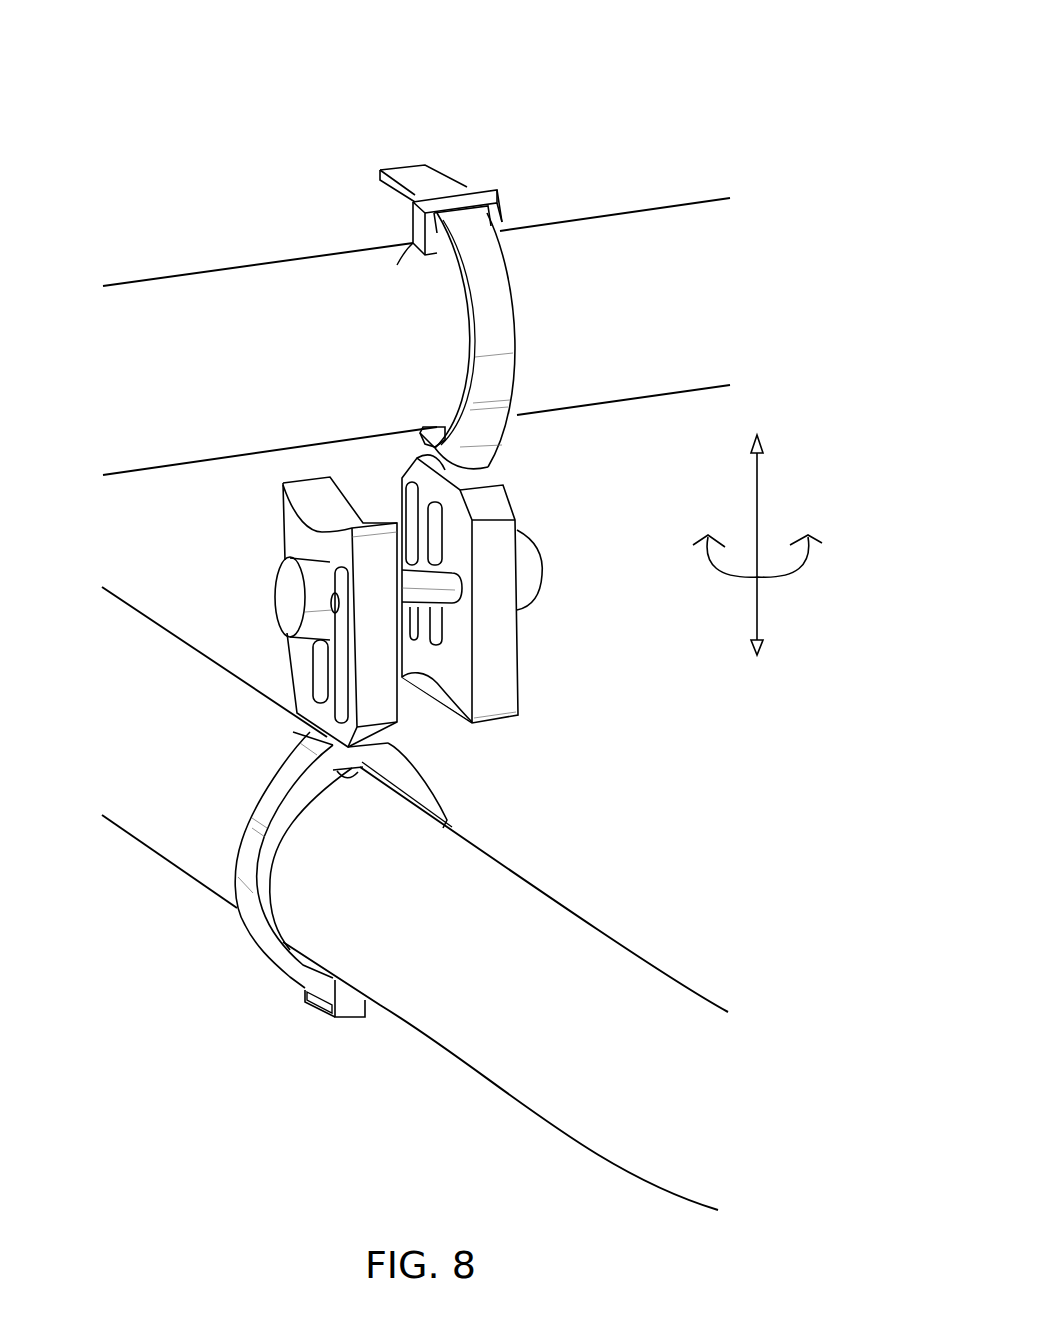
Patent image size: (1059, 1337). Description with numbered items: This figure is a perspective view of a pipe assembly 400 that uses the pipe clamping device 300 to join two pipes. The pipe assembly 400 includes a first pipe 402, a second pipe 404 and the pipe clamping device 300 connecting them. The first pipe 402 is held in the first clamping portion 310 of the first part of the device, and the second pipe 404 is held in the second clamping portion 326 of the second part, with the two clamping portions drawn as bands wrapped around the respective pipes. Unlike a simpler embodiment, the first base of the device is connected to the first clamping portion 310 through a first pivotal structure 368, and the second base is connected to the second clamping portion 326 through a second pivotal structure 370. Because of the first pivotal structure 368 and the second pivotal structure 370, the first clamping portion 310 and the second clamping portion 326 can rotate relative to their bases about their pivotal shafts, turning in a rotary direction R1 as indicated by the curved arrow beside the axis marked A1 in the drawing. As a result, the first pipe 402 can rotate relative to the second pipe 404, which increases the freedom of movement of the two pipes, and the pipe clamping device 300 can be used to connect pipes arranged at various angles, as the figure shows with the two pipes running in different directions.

The pipe assembly 400 is at (652, 41).
The first pipe 402 is at (692, 200).
The second pipe 404 is at (660, 973).
The first clamping portion 310 is at (502, 313).
The first pivotal structure 368 is at (440, 430).
The pipe clamping device 300 is at (529, 666).
The second clamping portion 326 is at (255, 927).
The second pivotal structure 370 is at (353, 778).
The axis A1 is at (743, 545).
The rotary direction R1 is at (758, 542).